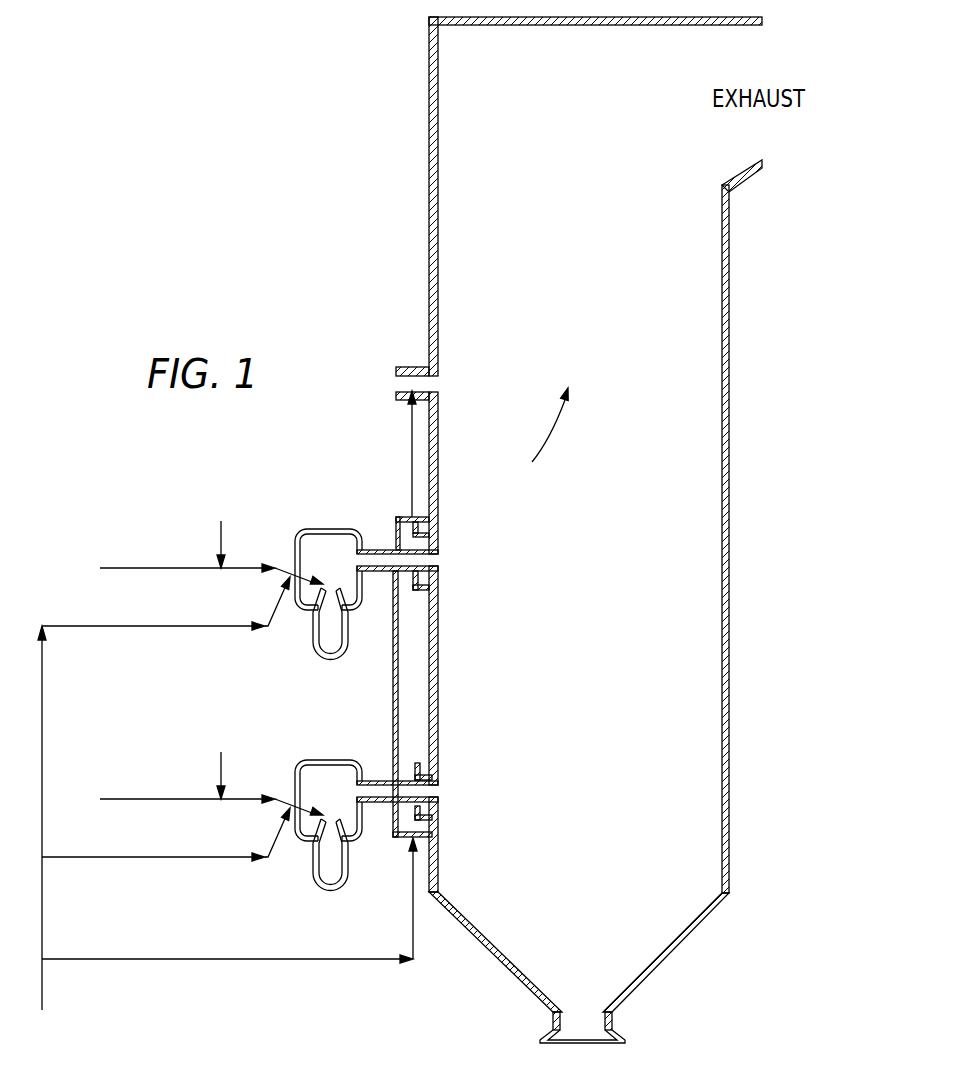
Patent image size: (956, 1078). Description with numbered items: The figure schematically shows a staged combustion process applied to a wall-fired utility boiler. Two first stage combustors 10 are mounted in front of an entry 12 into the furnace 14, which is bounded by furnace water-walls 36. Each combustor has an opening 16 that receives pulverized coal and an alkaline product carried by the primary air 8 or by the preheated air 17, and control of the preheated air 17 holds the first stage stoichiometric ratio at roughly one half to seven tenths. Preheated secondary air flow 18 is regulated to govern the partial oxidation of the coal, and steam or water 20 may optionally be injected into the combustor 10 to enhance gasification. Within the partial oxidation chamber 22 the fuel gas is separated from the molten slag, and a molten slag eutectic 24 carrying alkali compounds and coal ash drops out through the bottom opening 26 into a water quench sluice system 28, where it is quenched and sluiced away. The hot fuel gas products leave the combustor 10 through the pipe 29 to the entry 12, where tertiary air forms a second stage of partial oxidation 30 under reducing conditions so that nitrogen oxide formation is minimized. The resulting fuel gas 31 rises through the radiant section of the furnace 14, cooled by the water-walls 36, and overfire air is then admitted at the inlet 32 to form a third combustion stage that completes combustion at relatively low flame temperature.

The carrier primary air 8 is at (153, 567).
The first stage combustor 10 is at (333, 529).
The entry 12 is at (433, 559).
The furnace 14 is at (592, 734).
The openings 16 is at (292, 576).
The preheated air 17 is at (170, 628).
The secondary air flow 18 is at (338, 961).
The steam or water 20 is at (219, 530).
The partial oxidation chamber 22 is at (353, 590).
The molten slag eutectic 24 is at (327, 630).
The bottom opening 26 is at (320, 628).
The water quench sluice system 28 is at (337, 648).
The pipe 29 is at (377, 550).
The second stage of partial oxidation 30 is at (441, 546).
The fuel gas 31 is at (598, 438).
The inlet 32 is at (432, 381).
The furnace water-walls 36 is at (441, 427).